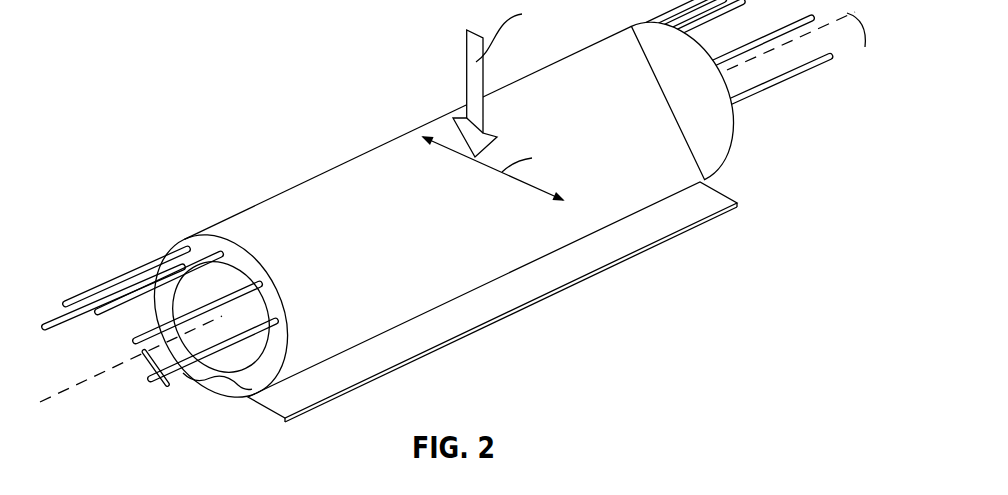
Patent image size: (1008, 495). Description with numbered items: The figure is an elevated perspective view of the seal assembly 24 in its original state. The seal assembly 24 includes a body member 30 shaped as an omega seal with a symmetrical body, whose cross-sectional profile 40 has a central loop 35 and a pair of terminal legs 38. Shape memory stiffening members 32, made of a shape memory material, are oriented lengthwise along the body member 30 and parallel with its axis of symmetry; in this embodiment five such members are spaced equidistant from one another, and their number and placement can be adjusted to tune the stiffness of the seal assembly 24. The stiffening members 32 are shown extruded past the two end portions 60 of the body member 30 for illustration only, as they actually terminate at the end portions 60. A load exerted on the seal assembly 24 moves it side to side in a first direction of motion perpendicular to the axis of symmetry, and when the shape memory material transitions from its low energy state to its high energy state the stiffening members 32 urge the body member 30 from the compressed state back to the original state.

The seal assembly 24 is at (465, 242).
The body member 30 is at (411, 241).
The shape memory stiffening members 32 is at (93, 291).
The central loop 35 is at (271, 303).
The terminal legs 38 is at (152, 356).
The cross-sectional profile 40 is at (240, 385).
The end portions 60 is at (258, 257).